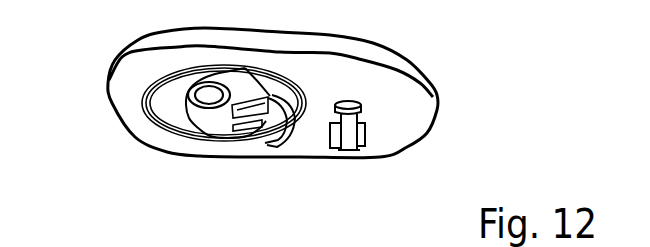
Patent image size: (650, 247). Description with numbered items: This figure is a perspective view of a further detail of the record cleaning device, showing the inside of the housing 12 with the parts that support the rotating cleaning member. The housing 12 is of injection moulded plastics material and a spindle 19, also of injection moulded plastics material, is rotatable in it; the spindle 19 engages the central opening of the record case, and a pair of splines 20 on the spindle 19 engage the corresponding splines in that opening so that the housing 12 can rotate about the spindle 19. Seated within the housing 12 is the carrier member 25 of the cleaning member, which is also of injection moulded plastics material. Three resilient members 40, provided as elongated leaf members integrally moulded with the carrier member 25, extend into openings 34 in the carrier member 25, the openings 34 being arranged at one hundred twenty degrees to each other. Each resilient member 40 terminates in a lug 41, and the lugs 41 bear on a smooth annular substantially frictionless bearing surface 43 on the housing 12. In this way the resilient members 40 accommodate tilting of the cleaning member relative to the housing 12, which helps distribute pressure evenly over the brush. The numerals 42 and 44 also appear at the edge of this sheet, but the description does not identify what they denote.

The housing 12 is at (442, 100).
The spindle 19 is at (350, 147).
The splines 20 is at (365, 133).
The carrier member 25 is at (222, 133).
The openings 34 is at (258, 132).
The resilient members 40 is at (203, 130).
The lugs 41 is at (268, 90).
The bearing surface 43 is at (143, 107).
The component 42 is at (225, 239).
The component 44 is at (343, 239).